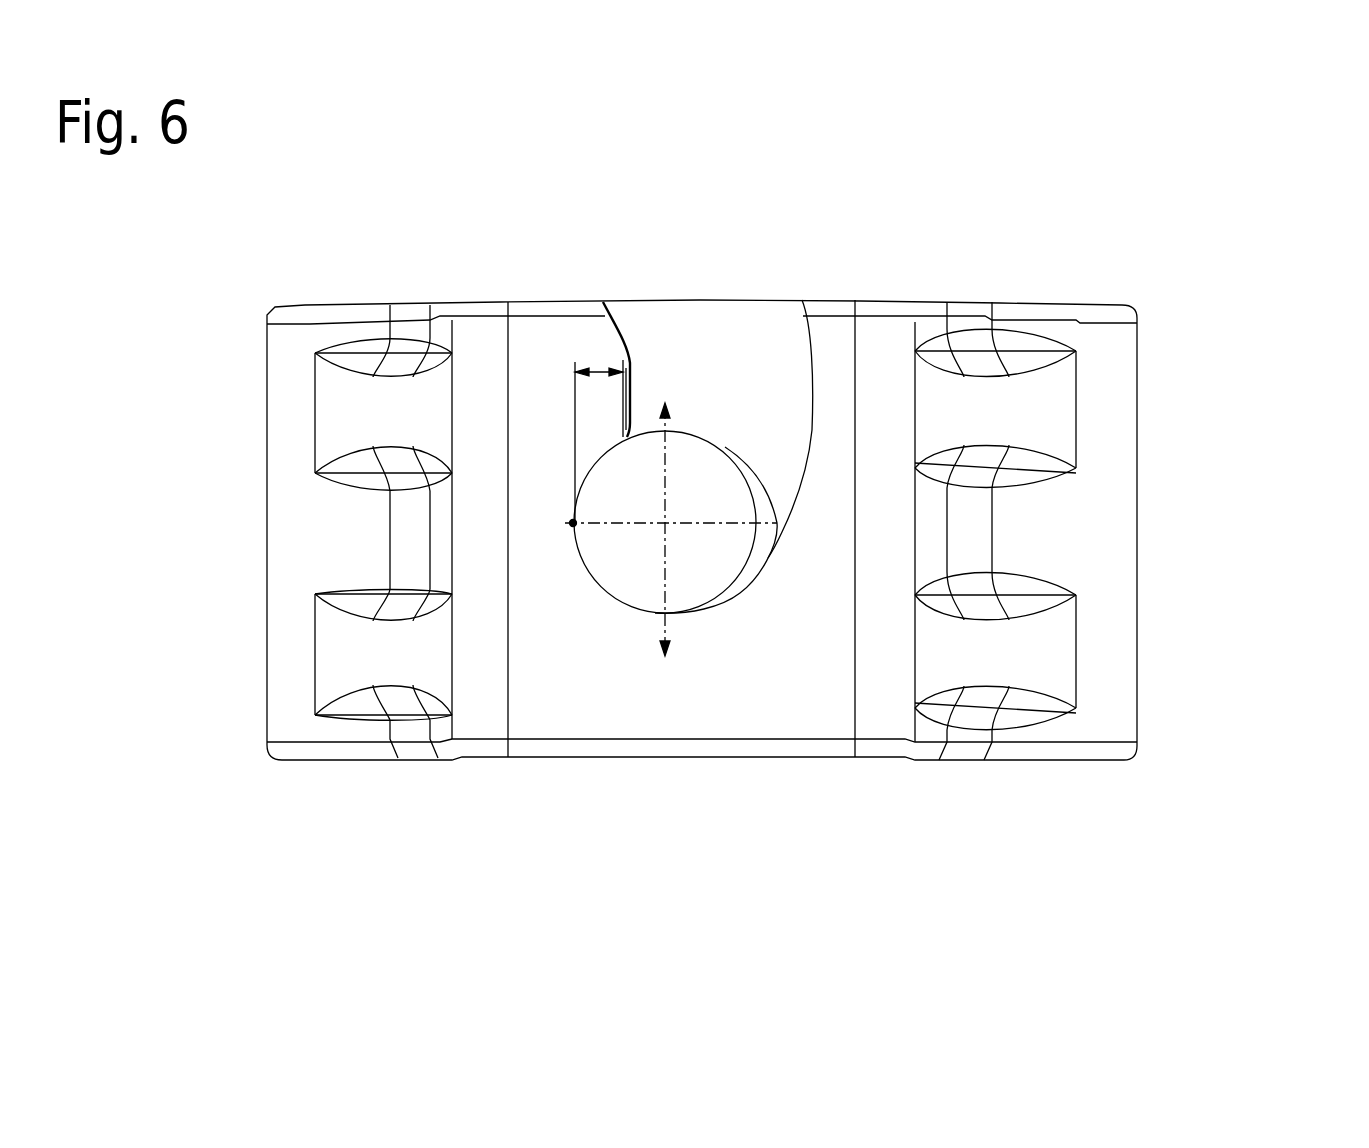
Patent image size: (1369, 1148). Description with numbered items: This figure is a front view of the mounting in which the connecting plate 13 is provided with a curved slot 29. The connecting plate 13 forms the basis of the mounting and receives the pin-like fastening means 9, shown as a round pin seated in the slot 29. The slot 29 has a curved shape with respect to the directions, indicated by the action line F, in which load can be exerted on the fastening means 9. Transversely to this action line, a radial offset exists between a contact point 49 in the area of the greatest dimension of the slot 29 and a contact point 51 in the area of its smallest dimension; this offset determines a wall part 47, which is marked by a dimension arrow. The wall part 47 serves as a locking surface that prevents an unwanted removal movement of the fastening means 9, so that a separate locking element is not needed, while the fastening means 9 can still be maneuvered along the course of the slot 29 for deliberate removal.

The pin-like fastening means 9 is at (713, 570).
The connecting plate 13 is at (1165, 692).
The slot 29 is at (777, 373).
The wall part 47 is at (605, 362).
The contact point 49 is at (573, 523).
The contact point 51 is at (630, 437).